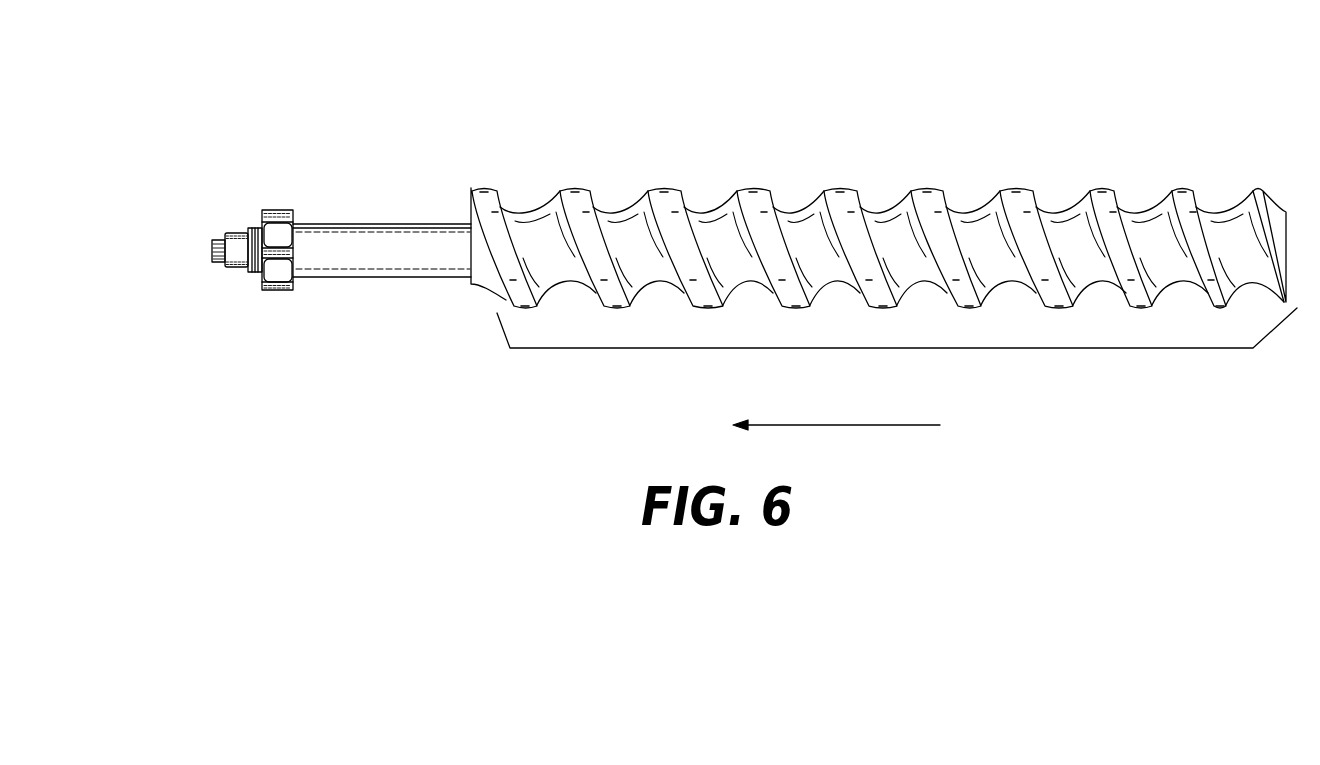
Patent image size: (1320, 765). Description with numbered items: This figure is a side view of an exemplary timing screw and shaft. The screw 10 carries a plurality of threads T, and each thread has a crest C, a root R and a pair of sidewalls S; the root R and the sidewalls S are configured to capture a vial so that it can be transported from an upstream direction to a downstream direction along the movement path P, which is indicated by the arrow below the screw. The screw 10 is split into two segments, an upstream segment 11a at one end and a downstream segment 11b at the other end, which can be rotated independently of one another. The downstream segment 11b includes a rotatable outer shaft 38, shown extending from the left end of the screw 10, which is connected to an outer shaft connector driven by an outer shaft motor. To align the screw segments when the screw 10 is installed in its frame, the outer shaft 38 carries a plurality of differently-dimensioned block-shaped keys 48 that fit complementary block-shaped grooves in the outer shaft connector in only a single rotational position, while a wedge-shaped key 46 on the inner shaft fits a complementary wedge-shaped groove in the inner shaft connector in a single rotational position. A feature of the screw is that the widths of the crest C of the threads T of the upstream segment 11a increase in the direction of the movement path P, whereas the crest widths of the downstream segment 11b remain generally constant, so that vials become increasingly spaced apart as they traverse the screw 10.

The screw 10 is at (924, 112).
The upstream segment 11a is at (1148, 227).
The downstream segment 11b is at (543, 212).
The outer shaft 38 is at (386, 240).
The wedge-shaped key 46 is at (211, 253).
The block-shaped keys 48 is at (283, 209).
The crest C is at (662, 198).
The root R is at (1066, 212).
The sidewalls S is at (684, 204).
The threads T is at (870, 349).
The movement path P is at (862, 427).